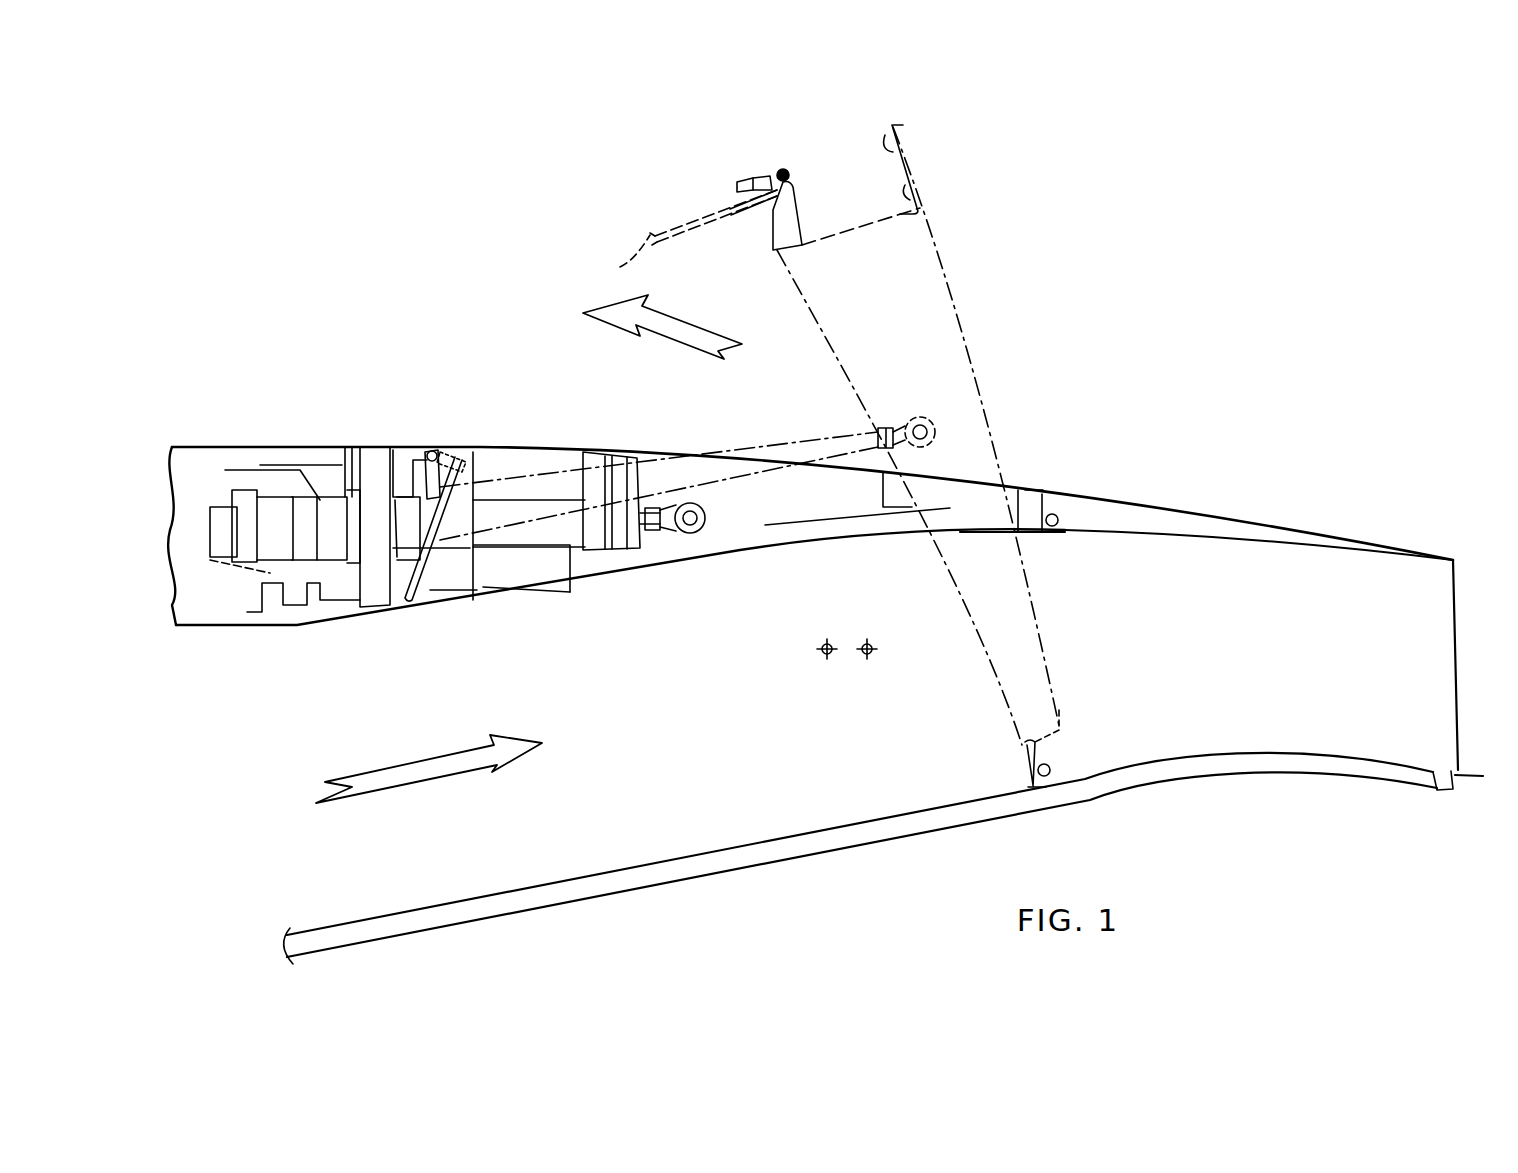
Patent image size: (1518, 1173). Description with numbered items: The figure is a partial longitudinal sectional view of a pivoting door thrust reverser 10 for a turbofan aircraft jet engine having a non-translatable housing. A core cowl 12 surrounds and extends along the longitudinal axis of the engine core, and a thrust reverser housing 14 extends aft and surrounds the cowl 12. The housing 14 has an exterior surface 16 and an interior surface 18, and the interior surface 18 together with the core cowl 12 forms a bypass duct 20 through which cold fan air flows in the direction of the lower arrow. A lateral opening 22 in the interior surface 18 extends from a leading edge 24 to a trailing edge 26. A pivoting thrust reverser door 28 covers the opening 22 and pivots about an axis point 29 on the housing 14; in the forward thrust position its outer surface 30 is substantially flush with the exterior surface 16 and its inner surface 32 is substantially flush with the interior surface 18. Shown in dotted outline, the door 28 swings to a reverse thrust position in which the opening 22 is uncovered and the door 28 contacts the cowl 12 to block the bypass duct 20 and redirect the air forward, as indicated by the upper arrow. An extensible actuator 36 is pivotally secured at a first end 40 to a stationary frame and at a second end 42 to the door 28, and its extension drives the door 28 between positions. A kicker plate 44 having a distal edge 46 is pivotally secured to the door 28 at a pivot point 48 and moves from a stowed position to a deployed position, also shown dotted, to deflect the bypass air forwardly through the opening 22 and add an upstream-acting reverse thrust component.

The pivoting door thrust reverser 10 is at (646, 632).
The core cowl 12 is at (1270, 752).
The thrust reverser housing 14 is at (1197, 505).
The exterior surface 16 is at (590, 447).
The interior surface 18 is at (757, 553).
The bypass duct 20 is at (1218, 655).
The lateral opening 22 is at (583, 580).
The leading edge 24 is at (733, 178).
The trailing edge 26 is at (1052, 535).
The pivoting thrust reverser door 28 is at (958, 300).
The axis point 29 is at (869, 655).
The outer surface 30 is at (483, 447).
The inner surface 32 is at (878, 548).
The extensible actuator 36 is at (500, 547).
The first end 40 is at (345, 470).
The second end 42 is at (710, 512).
The kicker plate 44 is at (705, 225).
The distal edge 46 is at (620, 267).
The pivot point 48 is at (825, 655).